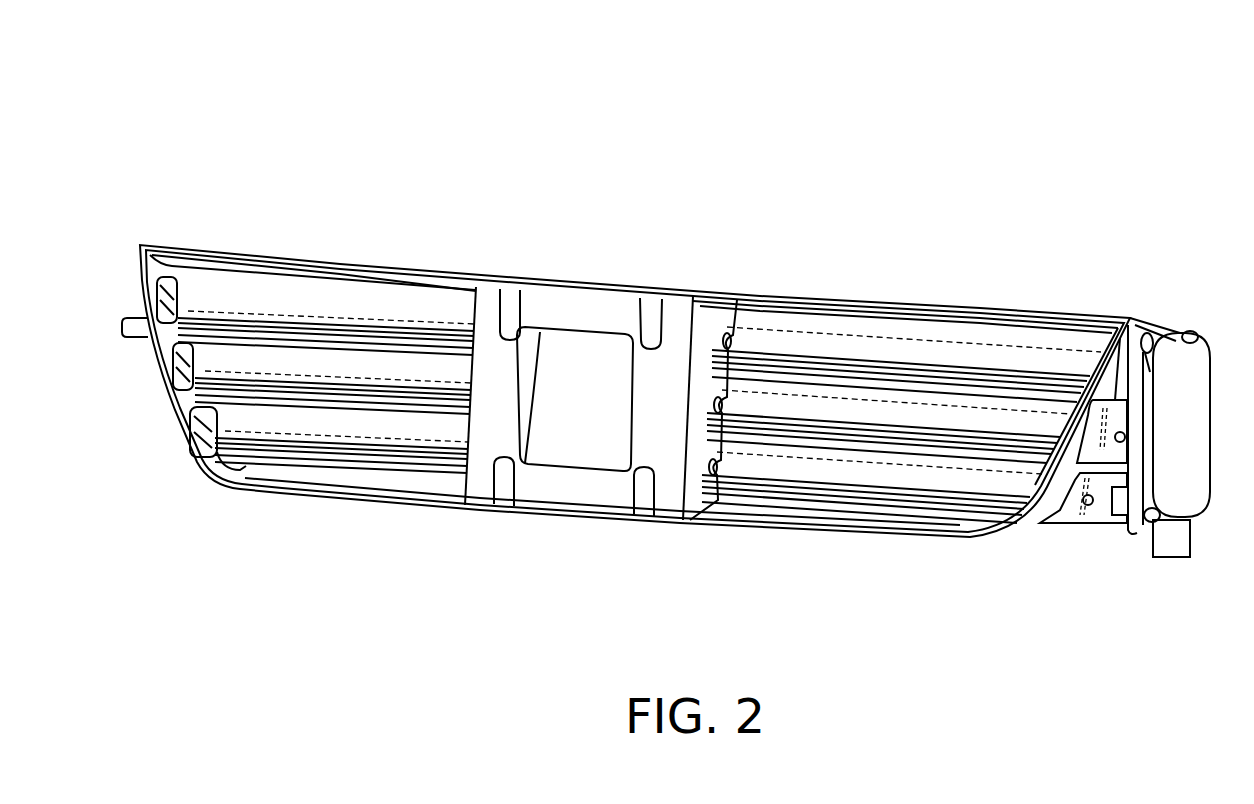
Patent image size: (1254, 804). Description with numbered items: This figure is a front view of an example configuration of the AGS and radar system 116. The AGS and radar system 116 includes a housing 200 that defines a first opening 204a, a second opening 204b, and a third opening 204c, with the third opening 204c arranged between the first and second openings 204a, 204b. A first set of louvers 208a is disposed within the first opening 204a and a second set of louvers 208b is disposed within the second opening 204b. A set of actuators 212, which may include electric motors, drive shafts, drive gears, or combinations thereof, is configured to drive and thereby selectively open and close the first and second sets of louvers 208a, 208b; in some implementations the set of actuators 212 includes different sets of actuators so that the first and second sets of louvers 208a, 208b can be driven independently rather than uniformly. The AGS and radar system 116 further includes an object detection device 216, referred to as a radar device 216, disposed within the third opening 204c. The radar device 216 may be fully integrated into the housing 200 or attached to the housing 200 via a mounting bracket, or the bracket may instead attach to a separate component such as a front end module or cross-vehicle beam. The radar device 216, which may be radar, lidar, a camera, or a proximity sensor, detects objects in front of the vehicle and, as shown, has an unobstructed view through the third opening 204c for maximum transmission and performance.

The AGS and radar system 116 is at (284, 152).
The housing 200 is at (140, 250).
The first opening 204a is at (333, 476).
The second opening 204b is at (886, 515).
The third opening 204c is at (575, 462).
The first set of louvers 208a is at (410, 307).
The second set of louvers 208b is at (917, 343).
The set of actuators 212 is at (1187, 503).
The object detection device 216 is at (592, 340).